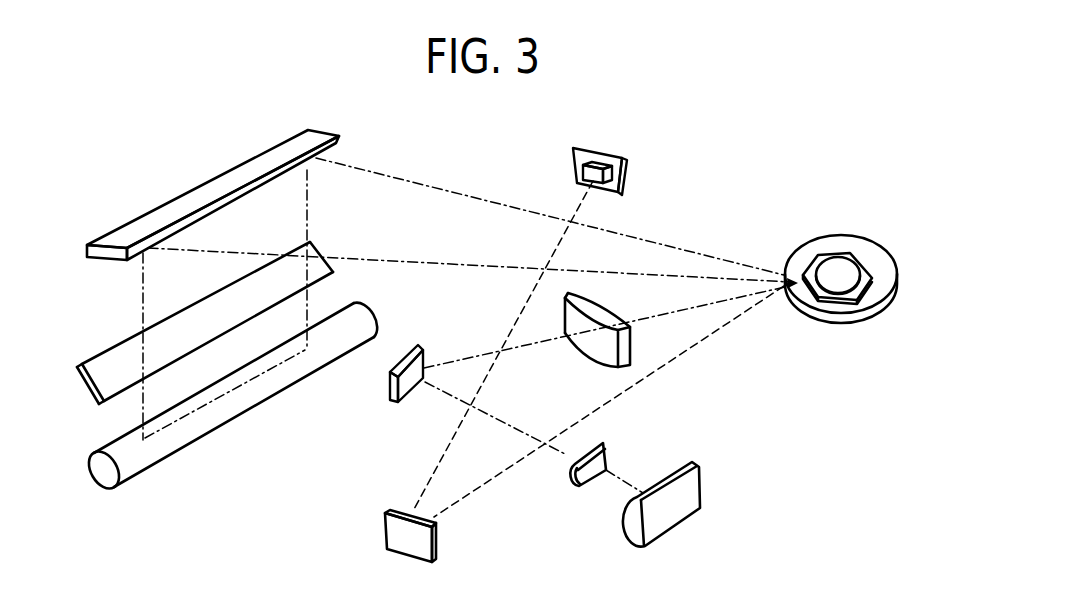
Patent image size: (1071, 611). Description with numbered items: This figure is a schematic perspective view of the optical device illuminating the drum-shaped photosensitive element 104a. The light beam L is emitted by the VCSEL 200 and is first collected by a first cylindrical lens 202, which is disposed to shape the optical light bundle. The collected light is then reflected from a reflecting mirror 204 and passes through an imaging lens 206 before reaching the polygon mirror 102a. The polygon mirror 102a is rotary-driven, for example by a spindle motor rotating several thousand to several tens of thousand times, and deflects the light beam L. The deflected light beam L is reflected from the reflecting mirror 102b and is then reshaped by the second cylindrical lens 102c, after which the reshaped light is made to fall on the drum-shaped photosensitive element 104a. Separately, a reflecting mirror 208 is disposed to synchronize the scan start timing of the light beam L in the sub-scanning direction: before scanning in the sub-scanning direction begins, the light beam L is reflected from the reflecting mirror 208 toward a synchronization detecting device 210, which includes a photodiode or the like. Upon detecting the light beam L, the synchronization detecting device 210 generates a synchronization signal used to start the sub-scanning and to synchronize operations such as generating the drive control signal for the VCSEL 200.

The polygon mirror 102a is at (860, 236).
The reflecting mirror 102b is at (339, 138).
The second cylindrical lens 102c is at (113, 354).
The drum-shaped photosensitive element 104a is at (373, 318).
The VCSEL 200 is at (700, 490).
The first cylindrical lens 202 is at (608, 457).
The reflecting mirror 204 is at (390, 403).
The imaging lens 206 is at (630, 343).
The reflecting mirror 208 is at (438, 545).
The synchronization detecting device 210 is at (628, 168).
The light beam L is at (507, 422).